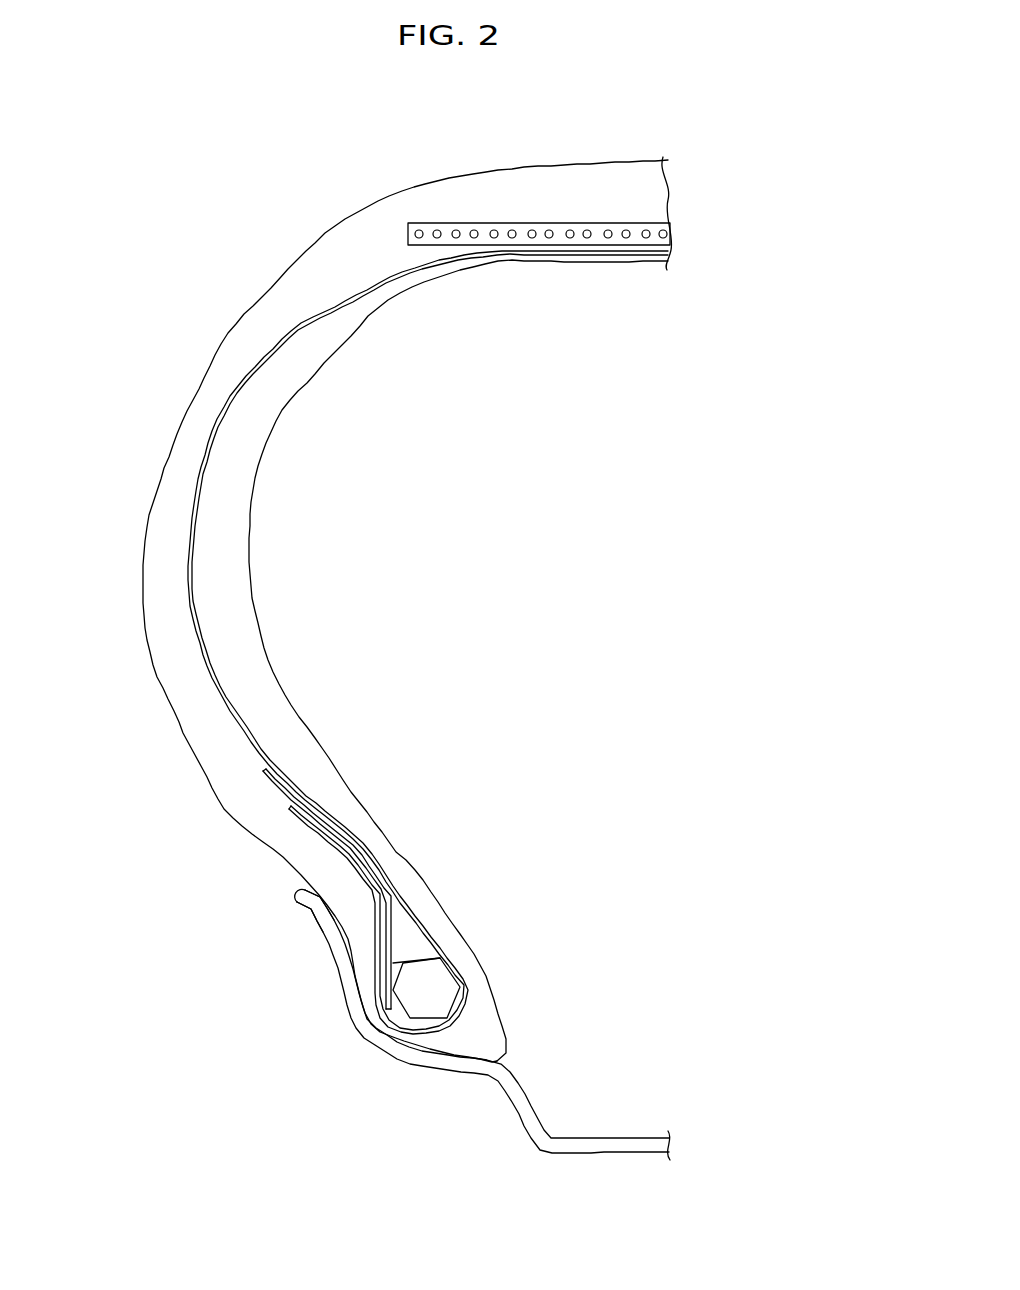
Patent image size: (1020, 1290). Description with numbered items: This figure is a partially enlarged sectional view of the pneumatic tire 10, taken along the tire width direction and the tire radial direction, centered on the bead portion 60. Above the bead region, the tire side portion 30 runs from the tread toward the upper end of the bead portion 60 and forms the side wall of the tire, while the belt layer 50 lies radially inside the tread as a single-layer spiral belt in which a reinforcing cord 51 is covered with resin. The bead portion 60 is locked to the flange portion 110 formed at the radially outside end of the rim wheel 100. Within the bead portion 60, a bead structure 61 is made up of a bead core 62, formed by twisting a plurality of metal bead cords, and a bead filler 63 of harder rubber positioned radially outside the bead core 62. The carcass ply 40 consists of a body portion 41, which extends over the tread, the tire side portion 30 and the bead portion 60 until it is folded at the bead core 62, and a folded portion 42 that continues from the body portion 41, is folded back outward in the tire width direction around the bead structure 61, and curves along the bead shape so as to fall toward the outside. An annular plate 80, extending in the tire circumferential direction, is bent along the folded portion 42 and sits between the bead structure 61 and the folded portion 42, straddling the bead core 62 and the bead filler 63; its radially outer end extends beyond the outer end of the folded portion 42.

The pneumatic tire 10 is at (653, 133).
The tire side portion 30 is at (168, 548).
The carcass ply 40 is at (105, 823).
The body portion 41 is at (258, 750).
The folded portion 42 is at (300, 823).
The belt layer 50 is at (559, 228).
The reinforcing cord 51 is at (495, 231).
The bead portion 60 is at (502, 838).
The bead structure 61 is at (583, 898).
The bead core 62 is at (418, 991).
The bead filler 63 is at (418, 940).
The annular plate 80 is at (290, 784).
The rim wheel 100 is at (613, 1146).
The flange portion 110 is at (303, 897).